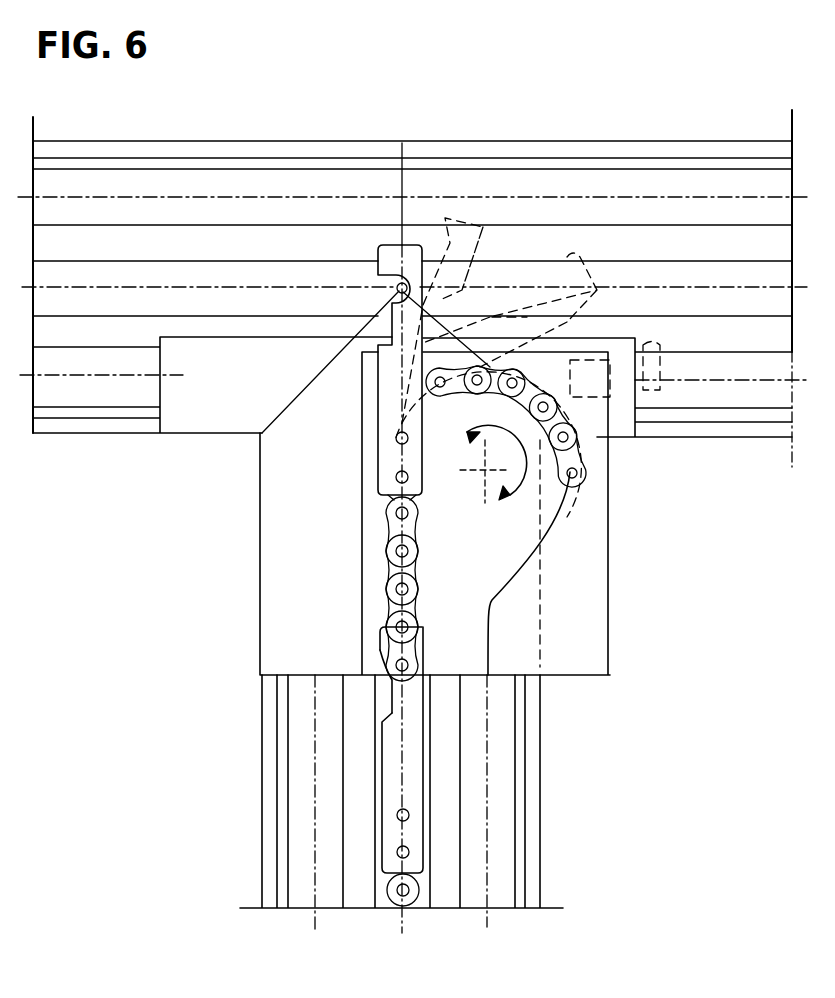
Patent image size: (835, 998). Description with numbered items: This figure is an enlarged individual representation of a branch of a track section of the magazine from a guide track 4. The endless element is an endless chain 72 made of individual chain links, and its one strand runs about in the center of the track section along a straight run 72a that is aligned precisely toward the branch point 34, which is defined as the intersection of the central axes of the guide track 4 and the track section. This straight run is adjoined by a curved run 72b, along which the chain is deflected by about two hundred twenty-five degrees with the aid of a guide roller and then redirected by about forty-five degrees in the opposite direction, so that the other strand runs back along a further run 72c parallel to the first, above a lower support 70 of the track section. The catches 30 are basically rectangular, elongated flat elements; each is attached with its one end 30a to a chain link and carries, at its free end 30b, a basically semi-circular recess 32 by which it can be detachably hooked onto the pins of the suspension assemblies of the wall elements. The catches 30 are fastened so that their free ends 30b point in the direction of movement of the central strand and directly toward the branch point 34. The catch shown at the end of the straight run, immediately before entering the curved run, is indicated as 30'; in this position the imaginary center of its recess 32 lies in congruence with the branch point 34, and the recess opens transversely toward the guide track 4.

The guide track 4 is at (514, 150).
The branch point 34 is at (398, 285).
The catch in branch position 30' is at (352, 370).
The vertical chain run 72a is at (403, 567).
The semi-circular recess 32 is at (396, 663).
The free end of catch 30b is at (410, 643).
The catch 30 is at (315, 750).
The attached end of catch 30a is at (408, 833).
The chain 72 is at (394, 903).
The chain guide 72b is at (560, 515).
The lower chain run 72c is at (490, 778).
The support 70 is at (268, 878).